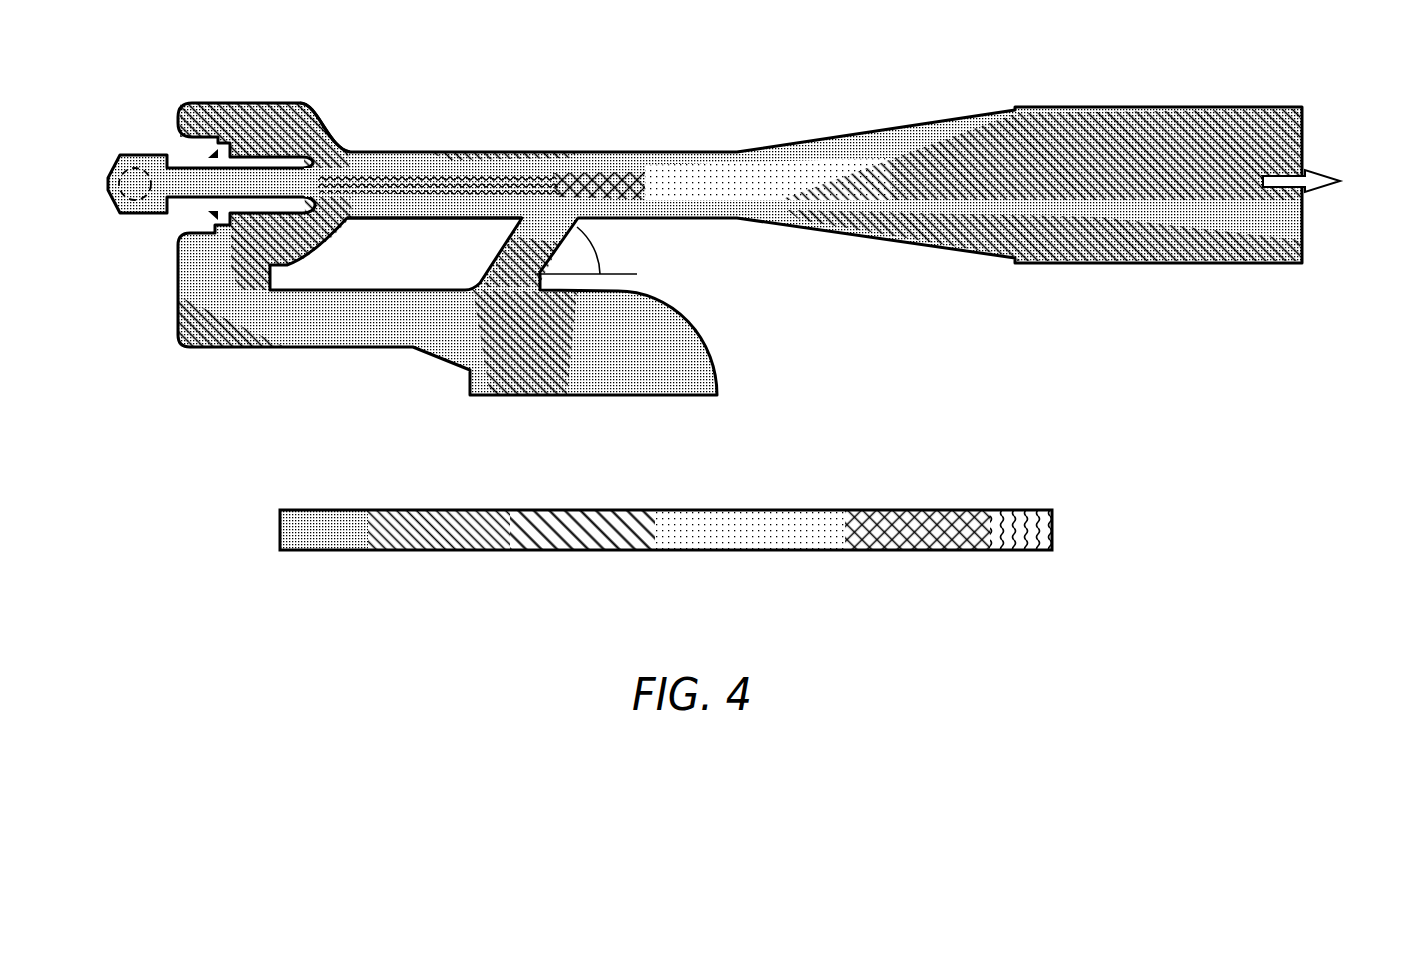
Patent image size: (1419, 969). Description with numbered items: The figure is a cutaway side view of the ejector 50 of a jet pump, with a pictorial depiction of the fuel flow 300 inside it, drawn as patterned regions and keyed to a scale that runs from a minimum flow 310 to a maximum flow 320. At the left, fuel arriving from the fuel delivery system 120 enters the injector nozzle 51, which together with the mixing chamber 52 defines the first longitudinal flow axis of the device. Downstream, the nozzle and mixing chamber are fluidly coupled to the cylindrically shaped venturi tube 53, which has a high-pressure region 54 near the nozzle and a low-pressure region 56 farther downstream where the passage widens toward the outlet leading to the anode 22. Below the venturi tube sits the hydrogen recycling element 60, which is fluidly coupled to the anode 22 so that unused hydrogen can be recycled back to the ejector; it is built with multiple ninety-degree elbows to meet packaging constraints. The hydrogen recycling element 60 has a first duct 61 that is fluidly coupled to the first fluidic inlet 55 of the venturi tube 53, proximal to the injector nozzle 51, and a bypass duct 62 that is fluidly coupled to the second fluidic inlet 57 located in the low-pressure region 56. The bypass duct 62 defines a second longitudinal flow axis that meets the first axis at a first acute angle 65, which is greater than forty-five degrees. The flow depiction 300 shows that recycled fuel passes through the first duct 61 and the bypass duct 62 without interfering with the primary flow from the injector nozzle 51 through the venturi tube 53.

The anode 22 is at (1335, 182).
The ejector 50 is at (528, 128).
The injector nozzle 51 is at (257, 165).
The mixing chamber 52 is at (305, 110).
The venturi tube 53 is at (562, 150).
The high-pressure region 54 is at (332, 135).
The first fluidic inlet 55 is at (268, 243).
The low-pressure region 56 is at (683, 150).
The second fluidic inlet 57 is at (547, 220).
The hydrogen recycling element 60 is at (277, 318).
The first duct 61 is at (193, 298).
The bypass duct 62 is at (500, 262).
The first acute angle 65 is at (600, 245).
The fuel delivery system 120 is at (133, 185).
The fuel flow 300 is at (666, 548).
The minimum flow 310 is at (282, 569).
The maximum flow 320 is at (1049, 570).